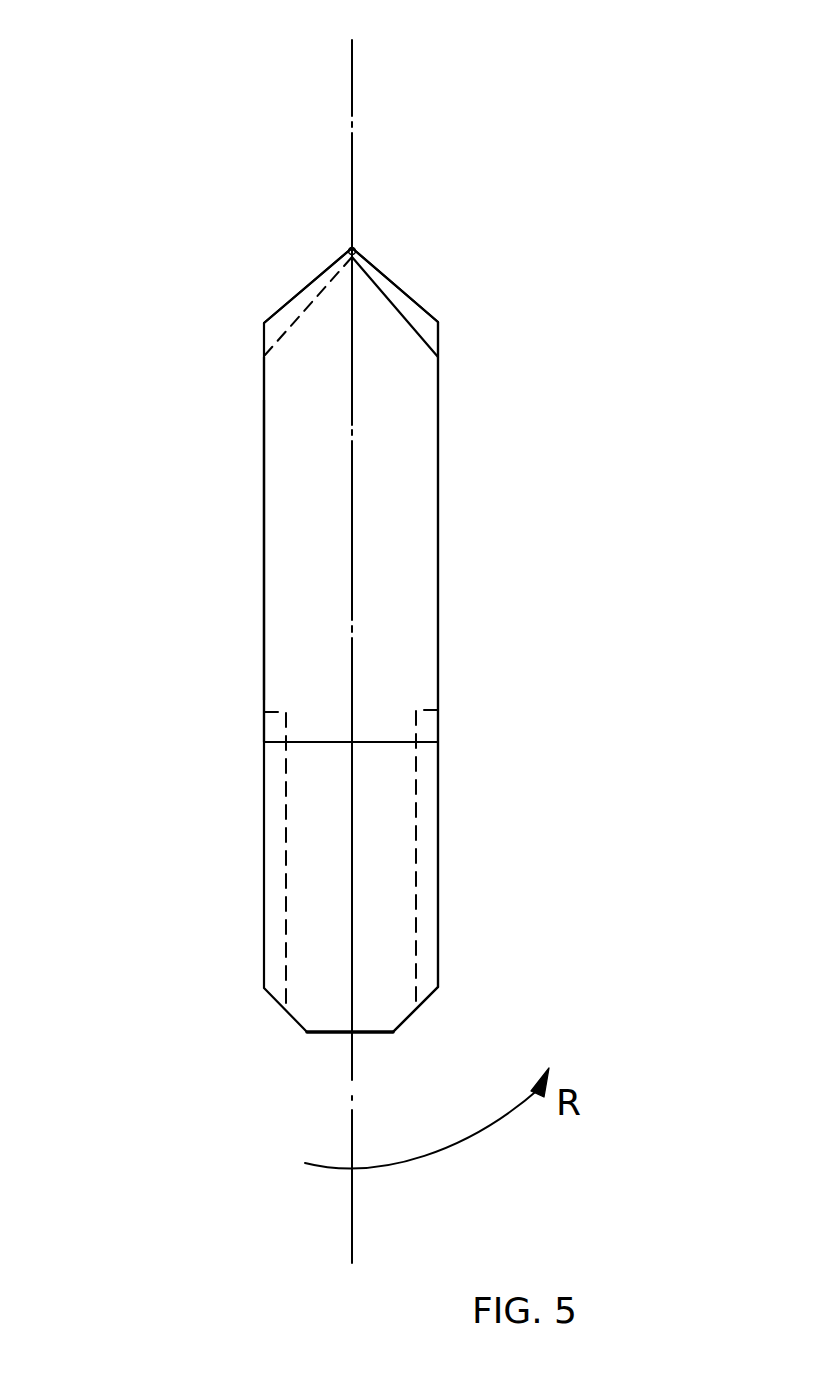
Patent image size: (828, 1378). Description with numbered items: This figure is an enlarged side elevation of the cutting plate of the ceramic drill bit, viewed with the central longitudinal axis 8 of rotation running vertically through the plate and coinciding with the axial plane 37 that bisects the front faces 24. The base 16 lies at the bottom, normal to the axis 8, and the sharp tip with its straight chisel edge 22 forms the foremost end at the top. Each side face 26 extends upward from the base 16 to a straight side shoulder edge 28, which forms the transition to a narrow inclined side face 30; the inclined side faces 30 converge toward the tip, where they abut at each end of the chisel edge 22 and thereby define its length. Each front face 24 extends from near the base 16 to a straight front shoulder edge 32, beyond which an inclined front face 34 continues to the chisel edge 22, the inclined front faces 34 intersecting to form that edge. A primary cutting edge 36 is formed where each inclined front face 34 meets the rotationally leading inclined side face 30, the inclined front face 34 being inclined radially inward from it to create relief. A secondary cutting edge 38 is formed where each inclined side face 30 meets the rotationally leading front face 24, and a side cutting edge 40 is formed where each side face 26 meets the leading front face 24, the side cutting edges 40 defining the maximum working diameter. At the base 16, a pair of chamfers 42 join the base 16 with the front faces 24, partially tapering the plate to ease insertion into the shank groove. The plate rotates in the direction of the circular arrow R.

The central longitudinal axis 8 is at (352, 87).
The axial plane 37 is at (407, 637).
The base 16 is at (325, 1035).
The chisel edge 22 is at (352, 248).
The primary cutting edge 36 is at (300, 287).
The inclined front face 34 is at (415, 318).
The front shoulder edge 32 is at (440, 337).
The front face 24 is at (264, 645).
The secondary cutting edge 38 is at (439, 512).
The inclined side face 30 is at (285, 565).
The side shoulder edge 28 is at (380, 742).
The side face 26 is at (325, 878).
The side cutting edge 40 is at (438, 878).
The chamfer 42 is at (408, 1012).